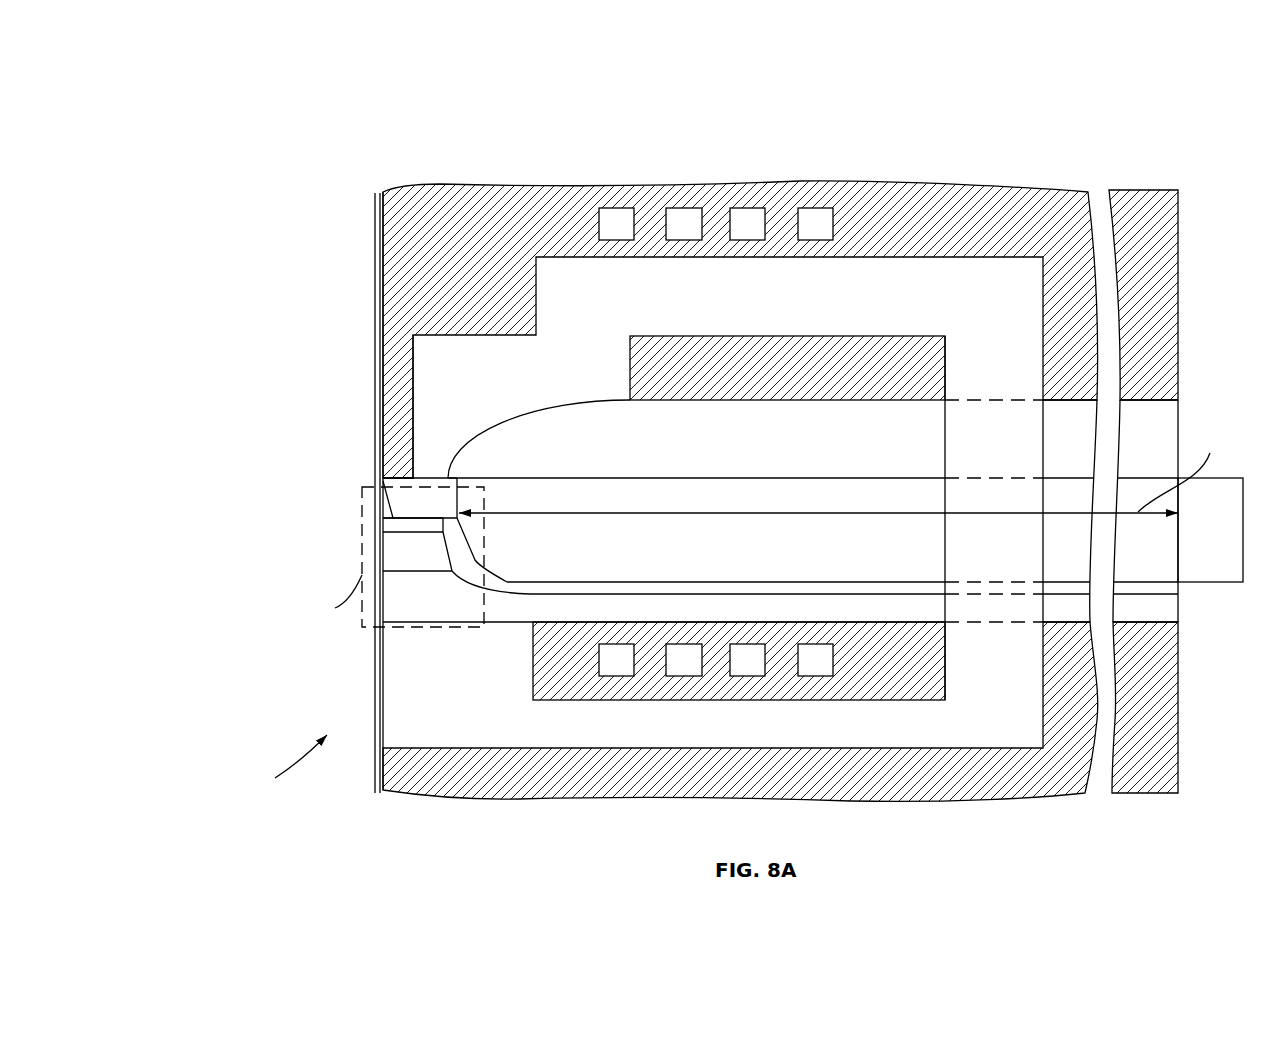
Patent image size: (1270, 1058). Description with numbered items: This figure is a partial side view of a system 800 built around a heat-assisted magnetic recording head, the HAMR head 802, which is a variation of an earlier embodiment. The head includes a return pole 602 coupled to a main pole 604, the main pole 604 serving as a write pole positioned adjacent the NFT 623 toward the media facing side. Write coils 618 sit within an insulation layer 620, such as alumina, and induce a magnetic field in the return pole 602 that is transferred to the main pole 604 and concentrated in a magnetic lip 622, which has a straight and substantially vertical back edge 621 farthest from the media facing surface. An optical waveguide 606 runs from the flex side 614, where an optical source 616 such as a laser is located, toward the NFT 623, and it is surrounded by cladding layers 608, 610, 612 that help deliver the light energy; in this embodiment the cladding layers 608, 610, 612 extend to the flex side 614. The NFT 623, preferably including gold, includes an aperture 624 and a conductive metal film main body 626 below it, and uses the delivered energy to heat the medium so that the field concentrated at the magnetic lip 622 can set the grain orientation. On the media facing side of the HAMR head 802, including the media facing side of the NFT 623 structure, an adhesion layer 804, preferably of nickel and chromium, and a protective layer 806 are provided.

The system 800 is at (173, 103).
The HAMR head 802 is at (242, 383).
The adhesion layer 804 is at (380, 407).
The protective layer 806 is at (373, 350).
The return pole 602 is at (898, 748).
The main pole 604 is at (481, 409).
The optical waveguide 606 is at (739, 547).
The cladding layer 608 is at (740, 451).
The cladding layer 610 is at (493, 586).
The cladding layer 612 is at (741, 616).
The flex side 614 is at (1180, 728).
The optical source 616 is at (1226, 547).
The write coils 618 is at (683, 208).
The insulation layer 620 is at (877, 215).
The back edge 621 is at (462, 497).
The magnetic lip 622 is at (432, 508).
The NFT 623 is at (326, 538).
The aperture 624 is at (380, 488).
The main body 626 is at (432, 560).